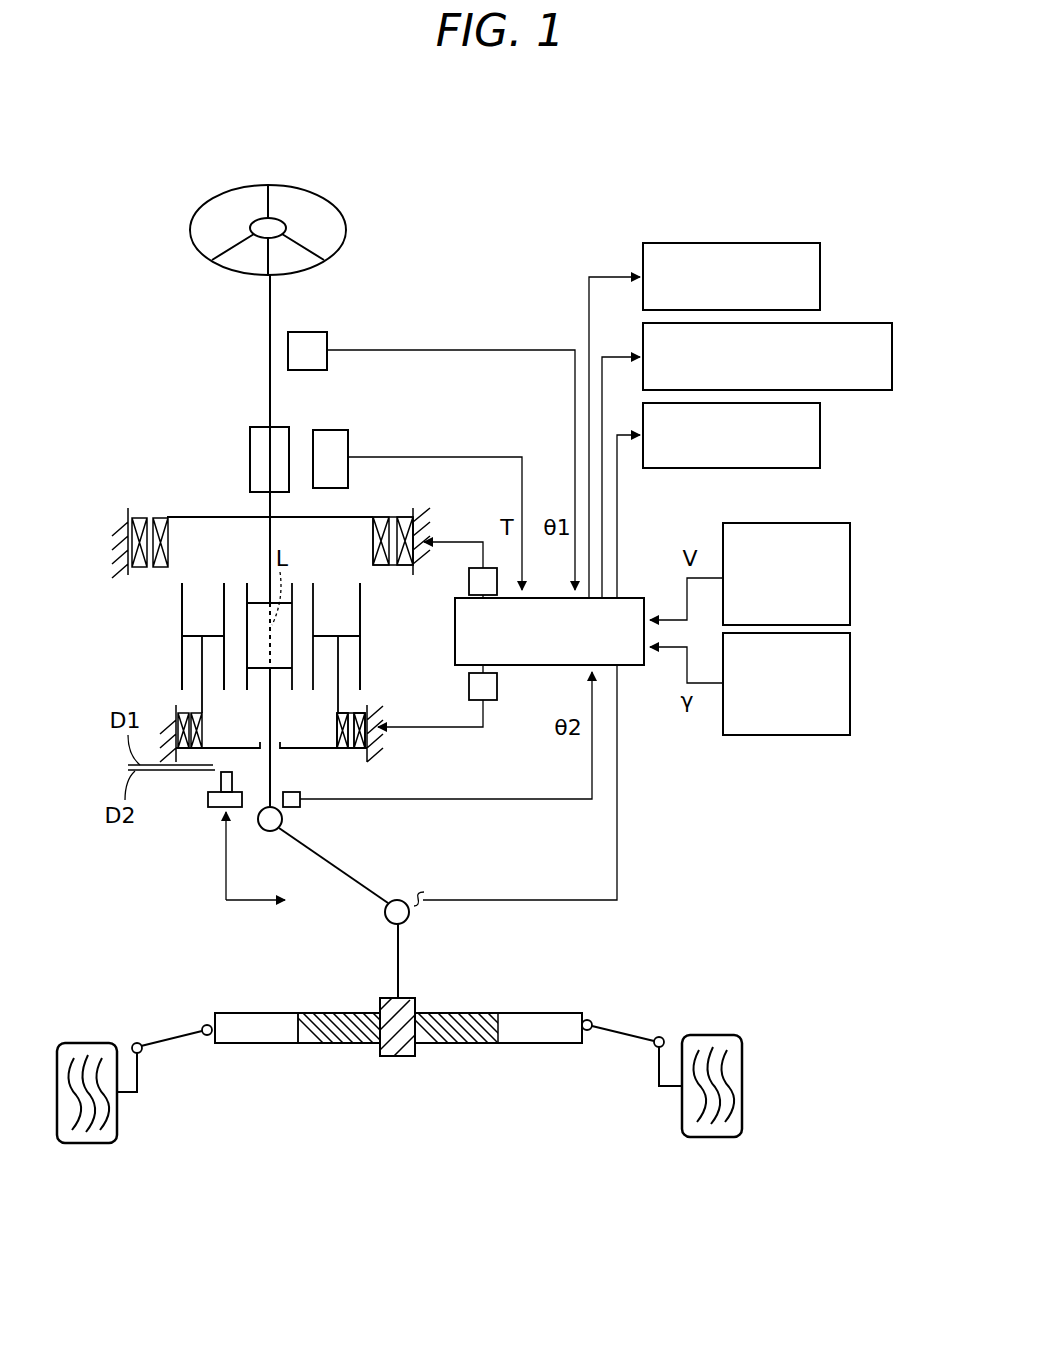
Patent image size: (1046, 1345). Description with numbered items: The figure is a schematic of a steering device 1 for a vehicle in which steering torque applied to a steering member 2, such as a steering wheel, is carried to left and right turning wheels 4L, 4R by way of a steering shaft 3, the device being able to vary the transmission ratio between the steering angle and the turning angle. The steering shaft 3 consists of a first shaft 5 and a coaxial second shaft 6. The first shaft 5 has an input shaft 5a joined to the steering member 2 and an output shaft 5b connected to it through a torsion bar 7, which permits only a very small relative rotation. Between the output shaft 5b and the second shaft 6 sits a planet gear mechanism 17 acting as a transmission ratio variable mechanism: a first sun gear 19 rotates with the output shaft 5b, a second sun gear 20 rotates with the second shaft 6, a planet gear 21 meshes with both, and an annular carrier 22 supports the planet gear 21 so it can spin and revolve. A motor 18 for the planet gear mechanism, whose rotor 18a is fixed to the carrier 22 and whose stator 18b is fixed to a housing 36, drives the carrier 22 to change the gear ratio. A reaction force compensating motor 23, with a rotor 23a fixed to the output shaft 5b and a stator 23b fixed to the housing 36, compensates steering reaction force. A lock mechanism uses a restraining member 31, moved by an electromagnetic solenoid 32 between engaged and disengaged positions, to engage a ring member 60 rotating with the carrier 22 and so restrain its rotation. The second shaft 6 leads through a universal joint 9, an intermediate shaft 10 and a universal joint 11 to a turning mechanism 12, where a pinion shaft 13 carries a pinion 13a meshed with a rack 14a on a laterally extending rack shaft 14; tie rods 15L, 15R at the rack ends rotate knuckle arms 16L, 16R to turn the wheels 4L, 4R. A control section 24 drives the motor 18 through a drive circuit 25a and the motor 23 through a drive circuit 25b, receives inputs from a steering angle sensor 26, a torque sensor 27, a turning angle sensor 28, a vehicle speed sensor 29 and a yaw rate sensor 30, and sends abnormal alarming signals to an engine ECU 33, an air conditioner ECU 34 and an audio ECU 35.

The steering device 1 is at (558, 216).
The steering member 2 is at (320, 192).
The steering shaft 3 is at (275, 296).
The left turning wheel 4L is at (86, 1043).
The right turning wheel 4R is at (712, 1035).
The first shaft 5 is at (182, 405).
The input shaft 5a is at (262, 426).
The output shaft 5b is at (262, 500).
The second shaft 6 is at (268, 795).
The torsion bar 7 is at (292, 442).
The universal joint 9 is at (265, 832).
The intermediate shaft 10 is at (320, 862).
The universal joint 11 is at (385, 922).
The turning mechanism 12 is at (398, 1024).
The pinion shaft 13 is at (397, 965).
The pinion 13a is at (416, 1052).
The rack shaft 14 is at (263, 1013).
The rack 14a is at (373, 1032).
The left tie rod 15L is at (172, 1036).
The right tie rod 15R is at (622, 1032).
The left knuckle arm 16L is at (140, 1075).
The right knuckle arm 16R is at (658, 1068).
The planet gear mechanism 17 is at (168, 599).
The motor for the planet gear mechanism 18 is at (462, 840).
The rotor 18a is at (343, 750).
The stator 18b is at (362, 750).
The first sun gear 19 is at (247, 600).
The second sun gear 20 is at (246, 657).
The planet gear 21 is at (182, 648).
The carrier 22 is at (313, 746).
The reaction force compensating motor 23 is at (458, 418).
The rotor 23a is at (380, 517).
The stator 23b is at (405, 517).
The control section 24 is at (527, 666).
The drive circuit 25a is at (469, 688).
The drive circuit 25b is at (469, 585).
The steering angle sensor 26 is at (327, 340).
The torque sensor 27 is at (332, 430).
The turning angle sensor 28 is at (302, 806).
The vehicle speed sensor 29 is at (850, 573).
The yaw rate sensor 30 is at (850, 683).
The restraining member 31 is at (221, 782).
The electromagnetic solenoid 32 is at (205, 808).
The engine ECU 33 is at (820, 275).
The air conditioner ECU 34 is at (892, 355).
The audio ECU 35 is at (820, 435).
The housing 36 is at (368, 712).
The ring member 60 is at (256, 748).